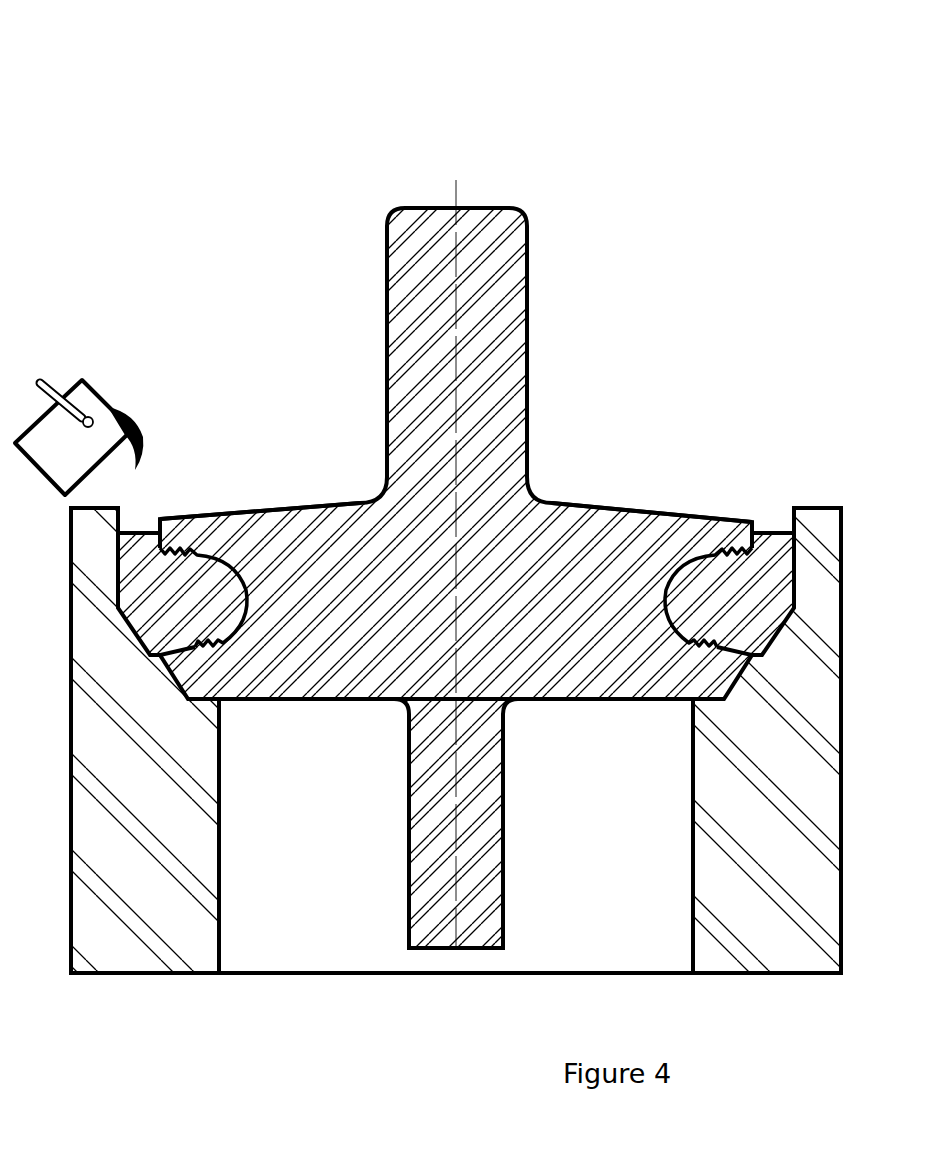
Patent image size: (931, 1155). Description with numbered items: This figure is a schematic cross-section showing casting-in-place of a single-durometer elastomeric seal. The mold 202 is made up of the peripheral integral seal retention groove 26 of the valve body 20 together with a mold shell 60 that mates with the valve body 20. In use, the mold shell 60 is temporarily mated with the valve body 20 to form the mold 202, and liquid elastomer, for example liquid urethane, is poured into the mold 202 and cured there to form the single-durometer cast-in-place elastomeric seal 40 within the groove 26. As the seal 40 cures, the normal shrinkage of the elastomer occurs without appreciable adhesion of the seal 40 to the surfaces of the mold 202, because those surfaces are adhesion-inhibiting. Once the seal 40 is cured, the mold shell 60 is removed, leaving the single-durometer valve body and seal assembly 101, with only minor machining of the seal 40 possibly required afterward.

The mold 202 is at (145, 197).
The single-durometer valve body and seal assembly 101 is at (322, 273).
The valve body 20 is at (320, 505).
The peripheral integral seal retention groove 26 is at (718, 597).
The single-durometer cast-in-place elastomeric seal 40 is at (762, 622).
The mold shell 60 is at (794, 797).